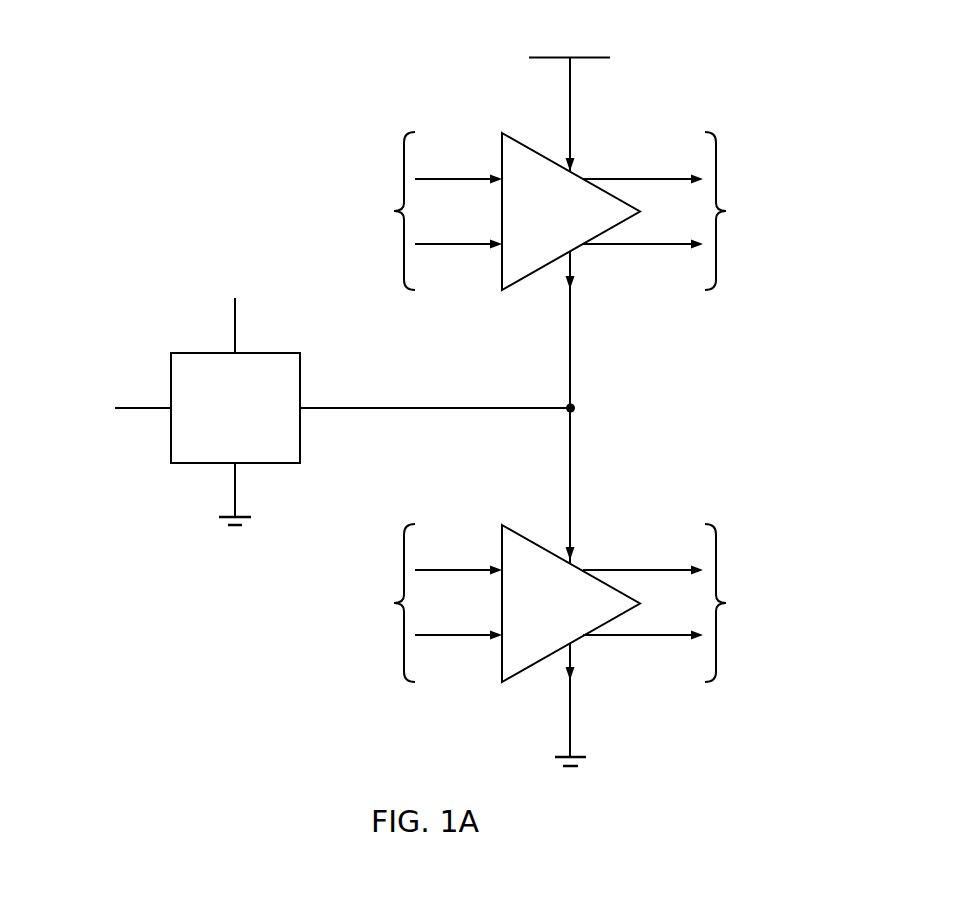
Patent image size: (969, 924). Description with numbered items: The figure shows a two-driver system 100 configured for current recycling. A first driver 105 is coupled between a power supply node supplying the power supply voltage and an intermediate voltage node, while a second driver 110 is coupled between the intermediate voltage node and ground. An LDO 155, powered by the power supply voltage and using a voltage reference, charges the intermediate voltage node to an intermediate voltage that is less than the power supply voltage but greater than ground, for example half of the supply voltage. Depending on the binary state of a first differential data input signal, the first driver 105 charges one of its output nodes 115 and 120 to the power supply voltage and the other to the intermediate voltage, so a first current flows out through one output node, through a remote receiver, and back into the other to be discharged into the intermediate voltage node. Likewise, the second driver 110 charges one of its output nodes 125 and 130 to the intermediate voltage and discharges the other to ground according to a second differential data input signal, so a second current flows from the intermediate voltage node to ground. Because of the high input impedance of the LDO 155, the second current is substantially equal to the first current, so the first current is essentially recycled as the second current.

The two-driver system 100 is at (280, 54).
The first driver 105 is at (532, 222).
The second driver 110 is at (532, 614).
The output node 115 is at (588, 176).
The output node 120 is at (588, 247).
The output node 125 is at (588, 569).
The output node 130 is at (590, 637).
The LDO 155 is at (300, 365).